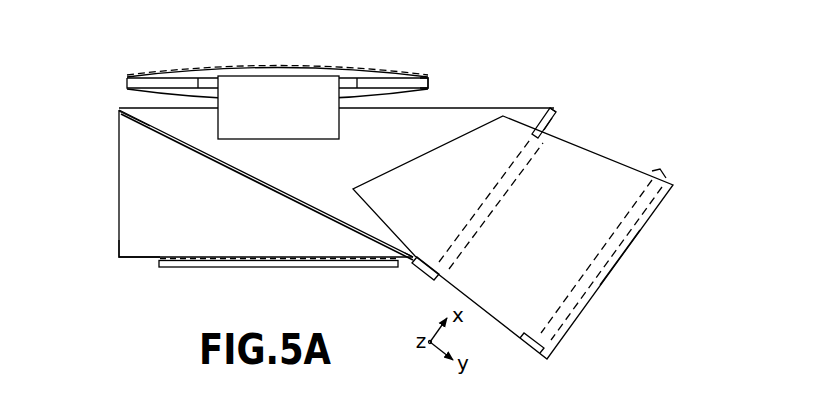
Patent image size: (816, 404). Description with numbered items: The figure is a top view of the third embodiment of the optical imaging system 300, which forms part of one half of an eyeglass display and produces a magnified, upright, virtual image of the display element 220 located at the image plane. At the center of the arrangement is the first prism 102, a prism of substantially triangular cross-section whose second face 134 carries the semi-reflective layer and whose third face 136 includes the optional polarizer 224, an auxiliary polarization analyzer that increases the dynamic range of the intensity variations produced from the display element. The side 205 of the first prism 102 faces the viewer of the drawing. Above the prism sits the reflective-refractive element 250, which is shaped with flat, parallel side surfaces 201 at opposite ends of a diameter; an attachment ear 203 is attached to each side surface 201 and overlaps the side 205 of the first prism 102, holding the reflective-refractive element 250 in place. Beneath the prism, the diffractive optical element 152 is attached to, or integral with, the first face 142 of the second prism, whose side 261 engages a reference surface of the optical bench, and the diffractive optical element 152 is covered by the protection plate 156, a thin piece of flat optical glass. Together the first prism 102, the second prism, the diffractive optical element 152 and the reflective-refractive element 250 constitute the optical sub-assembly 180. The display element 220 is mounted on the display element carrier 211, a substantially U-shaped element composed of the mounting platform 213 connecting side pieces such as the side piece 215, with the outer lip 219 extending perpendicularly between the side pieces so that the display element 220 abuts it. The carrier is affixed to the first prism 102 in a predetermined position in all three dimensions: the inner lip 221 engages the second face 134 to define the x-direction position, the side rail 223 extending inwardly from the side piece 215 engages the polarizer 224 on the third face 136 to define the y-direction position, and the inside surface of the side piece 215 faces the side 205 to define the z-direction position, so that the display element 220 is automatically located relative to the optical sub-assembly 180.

The optical imaging system 300 is at (269, 75).
The attachment ear 203 is at (279, 88).
The side surfaces 201 is at (350, 82).
The reflective-refractive element 250 is at (428, 82).
The side of the first prism 205 is at (160, 118).
The side of the second prism 261 is at (142, 163).
The first prism 102 is at (475, 108).
The third face 136 is at (541, 128).
The optical sub-assembly 180 is at (553, 104).
The polarizer 224 is at (557, 115).
The side rail 223 is at (538, 150).
The display element carrier 211 is at (617, 157).
The side piece 215 is at (605, 181).
The display element 220 is at (632, 232).
The mounting platform 213 is at (605, 280).
The outer lip 219 is at (528, 350).
The inner lip 221 is at (425, 275).
The second face 134 is at (413, 260).
The first face of the second prism 142 is at (135, 260).
The diffractive optical element 152 is at (197, 259).
The protection plate 156 is at (225, 263).